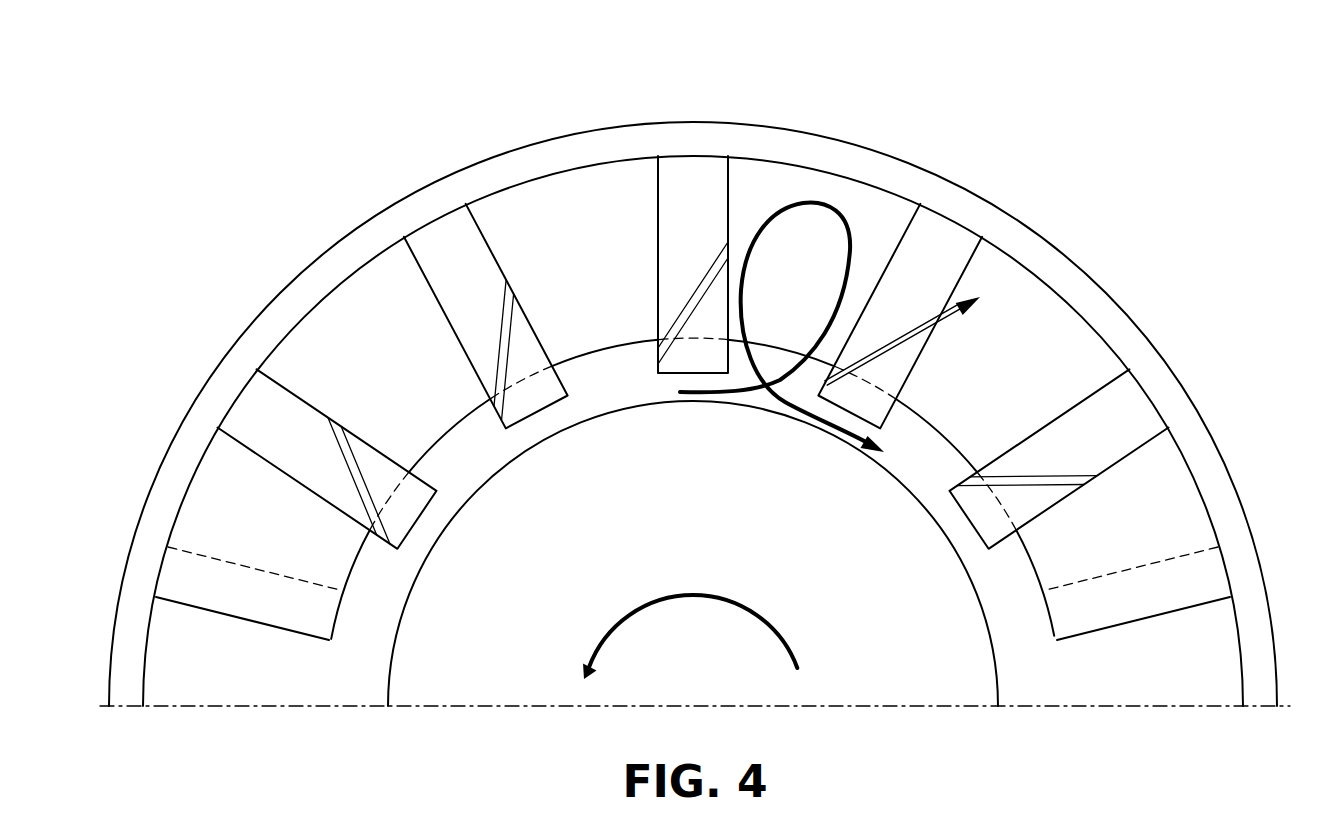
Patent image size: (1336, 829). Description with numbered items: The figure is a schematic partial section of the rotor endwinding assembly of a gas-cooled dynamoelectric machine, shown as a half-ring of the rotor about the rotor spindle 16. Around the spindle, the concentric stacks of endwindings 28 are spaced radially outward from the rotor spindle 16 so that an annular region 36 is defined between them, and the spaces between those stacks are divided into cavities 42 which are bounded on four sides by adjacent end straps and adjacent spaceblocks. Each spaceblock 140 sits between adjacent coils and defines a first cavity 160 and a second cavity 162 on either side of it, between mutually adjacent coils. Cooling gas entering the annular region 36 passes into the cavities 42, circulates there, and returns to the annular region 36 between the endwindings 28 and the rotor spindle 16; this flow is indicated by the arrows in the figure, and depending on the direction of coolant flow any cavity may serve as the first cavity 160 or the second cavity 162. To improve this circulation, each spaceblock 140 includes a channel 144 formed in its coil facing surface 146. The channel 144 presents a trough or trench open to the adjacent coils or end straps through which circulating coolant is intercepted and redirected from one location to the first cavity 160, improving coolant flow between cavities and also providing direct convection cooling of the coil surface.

The rotor spindle 16 is at (837, 678).
The endwindings 28 is at (1123, 626).
The annular region 36 is at (613, 375).
The cavities 42 is at (1003, 282).
The spaceblock 140 is at (461, 253).
The channel 144 is at (510, 358).
The coil facing surface 146 is at (938, 297).
The first cavity 160 is at (566, 217).
The second cavity 162 is at (367, 327).